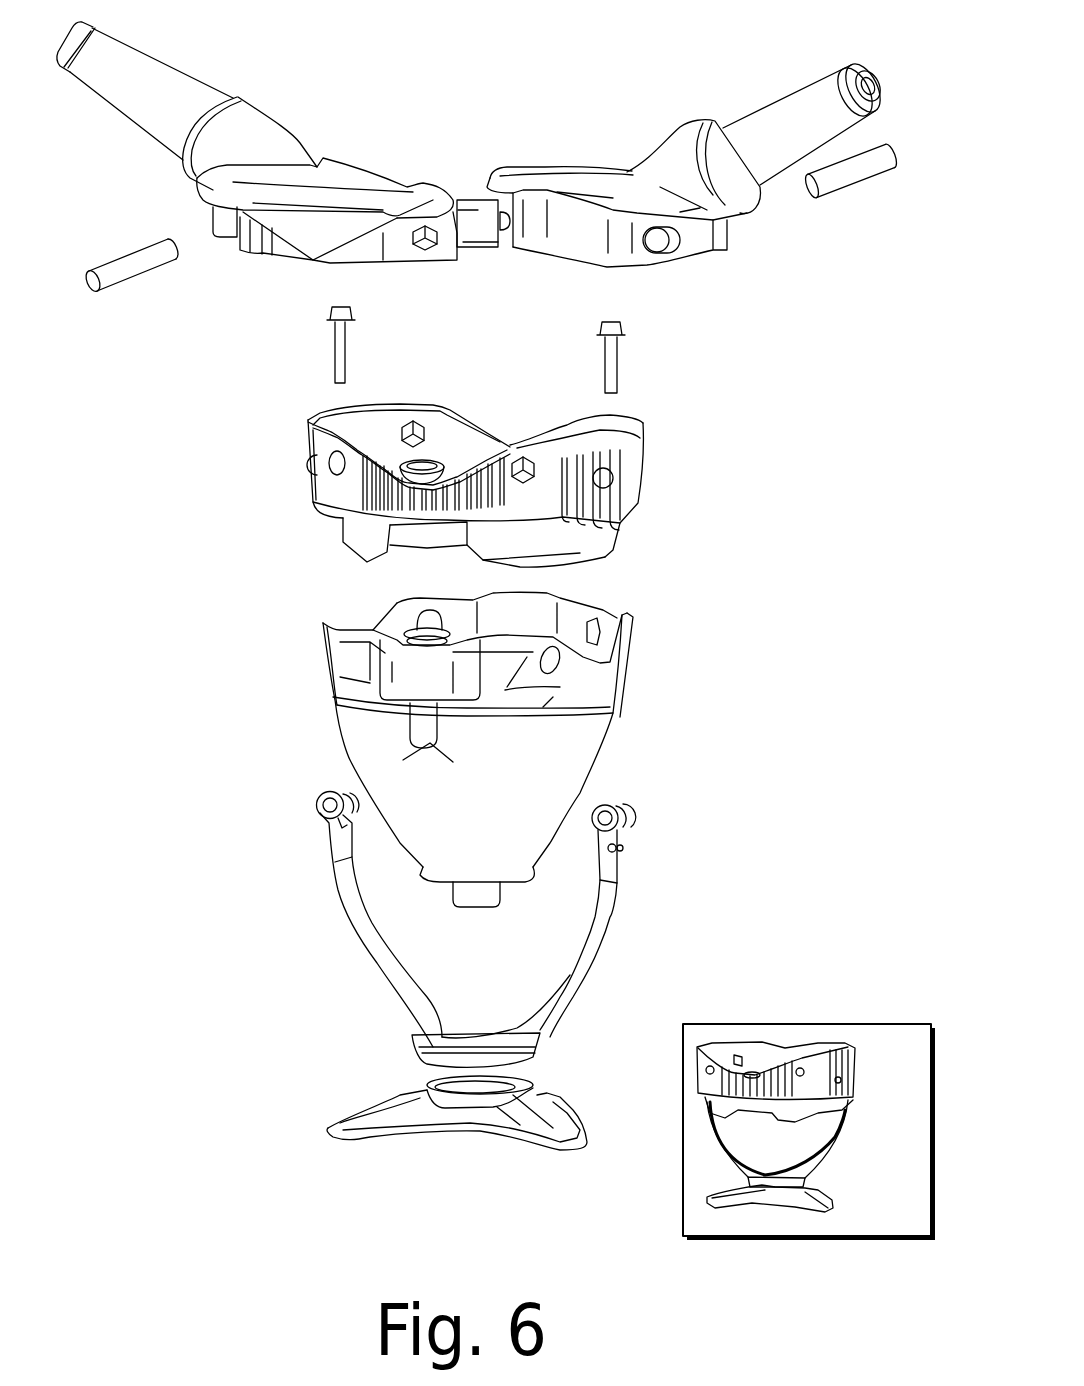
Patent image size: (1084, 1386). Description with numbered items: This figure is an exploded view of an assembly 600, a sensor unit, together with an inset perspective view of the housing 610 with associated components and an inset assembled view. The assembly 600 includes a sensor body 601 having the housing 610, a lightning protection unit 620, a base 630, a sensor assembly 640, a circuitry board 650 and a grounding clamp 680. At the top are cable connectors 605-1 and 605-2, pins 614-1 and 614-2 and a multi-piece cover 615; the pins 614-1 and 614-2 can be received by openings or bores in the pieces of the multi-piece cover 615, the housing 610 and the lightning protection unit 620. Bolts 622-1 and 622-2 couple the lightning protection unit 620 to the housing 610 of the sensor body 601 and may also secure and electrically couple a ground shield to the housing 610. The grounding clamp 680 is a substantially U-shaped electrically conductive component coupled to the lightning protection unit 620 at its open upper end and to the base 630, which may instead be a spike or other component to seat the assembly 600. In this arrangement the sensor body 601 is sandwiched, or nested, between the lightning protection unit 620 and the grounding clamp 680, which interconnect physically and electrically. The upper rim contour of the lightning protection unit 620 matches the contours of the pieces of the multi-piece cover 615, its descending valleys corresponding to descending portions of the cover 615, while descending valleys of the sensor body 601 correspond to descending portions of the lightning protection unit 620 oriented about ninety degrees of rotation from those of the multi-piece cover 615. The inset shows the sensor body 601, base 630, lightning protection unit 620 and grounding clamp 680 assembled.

The assembly 600 is at (485, 37).
The sensor body 601 is at (316, 738).
The cable connector 605-1 is at (797, 98).
The cable connector 605-2 is at (142, 77).
The housing 610 is at (600, 730).
The pin 614-1 is at (137, 268).
The pin 614-2 is at (847, 177).
The multi-piece cover 615 is at (729, 306).
The lightning protection unit 620 is at (628, 473).
The bolt 622-1 is at (338, 338).
The bolt 622-2 is at (610, 357).
The base 630 is at (577, 1143).
The sensor assembly 640 is at (497, 925).
The circuitry board 650 is at (389, 616).
The grounding clamp 680 is at (600, 927).